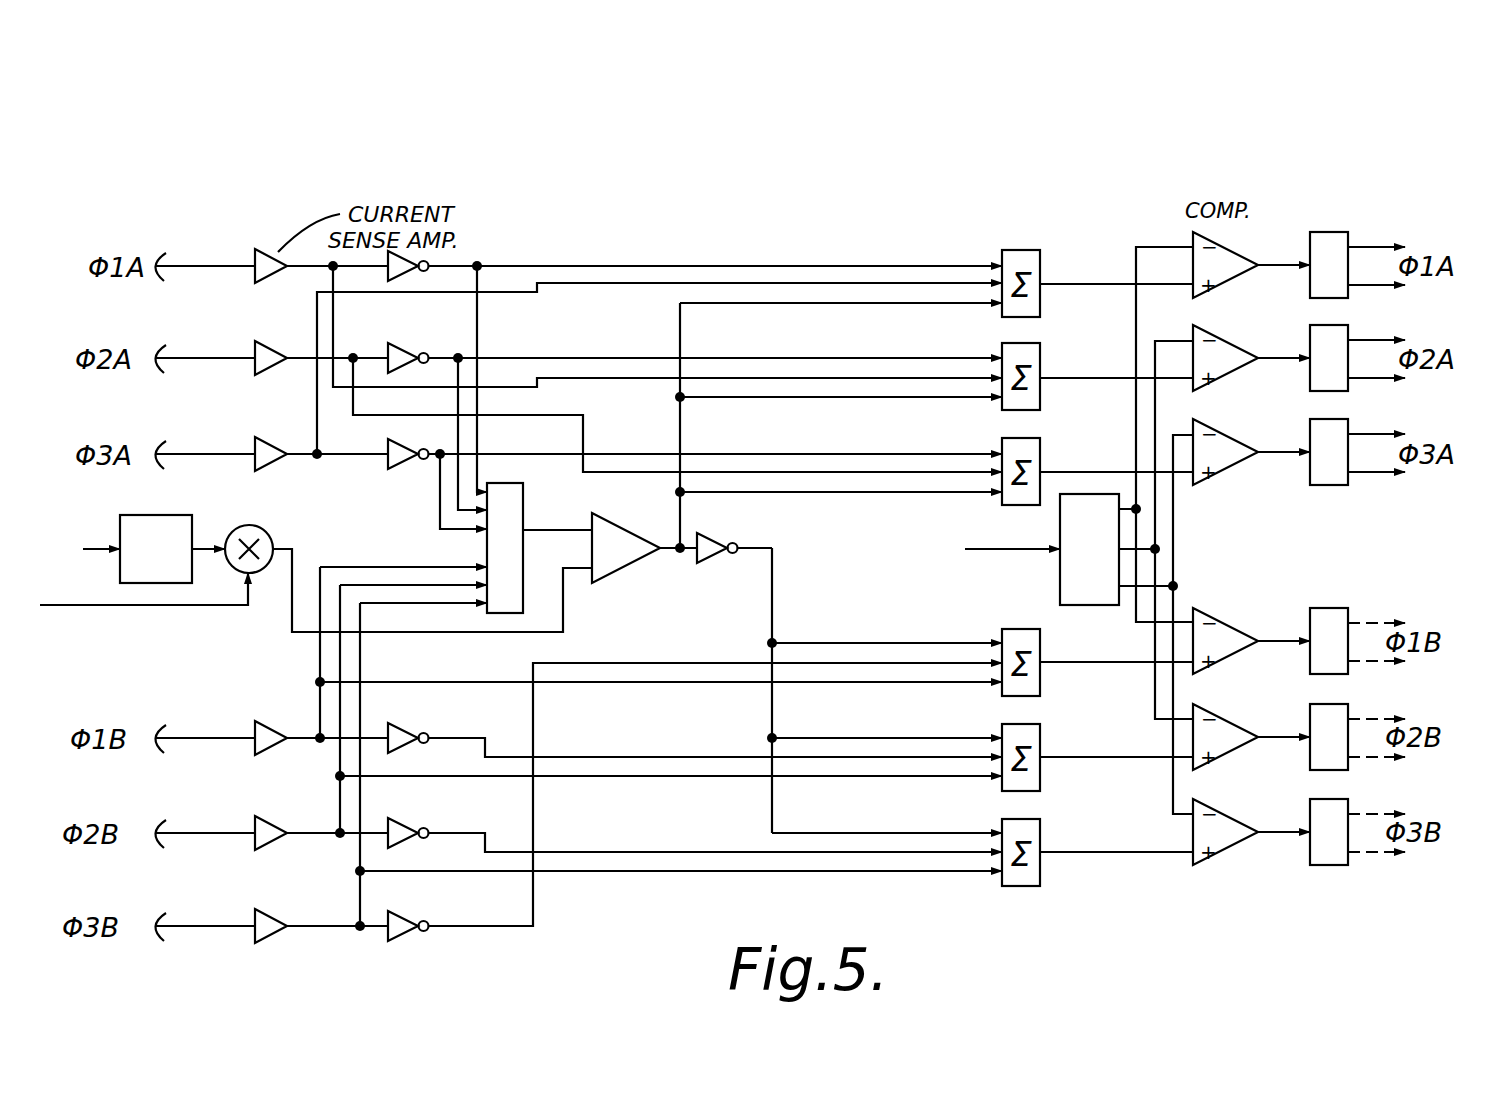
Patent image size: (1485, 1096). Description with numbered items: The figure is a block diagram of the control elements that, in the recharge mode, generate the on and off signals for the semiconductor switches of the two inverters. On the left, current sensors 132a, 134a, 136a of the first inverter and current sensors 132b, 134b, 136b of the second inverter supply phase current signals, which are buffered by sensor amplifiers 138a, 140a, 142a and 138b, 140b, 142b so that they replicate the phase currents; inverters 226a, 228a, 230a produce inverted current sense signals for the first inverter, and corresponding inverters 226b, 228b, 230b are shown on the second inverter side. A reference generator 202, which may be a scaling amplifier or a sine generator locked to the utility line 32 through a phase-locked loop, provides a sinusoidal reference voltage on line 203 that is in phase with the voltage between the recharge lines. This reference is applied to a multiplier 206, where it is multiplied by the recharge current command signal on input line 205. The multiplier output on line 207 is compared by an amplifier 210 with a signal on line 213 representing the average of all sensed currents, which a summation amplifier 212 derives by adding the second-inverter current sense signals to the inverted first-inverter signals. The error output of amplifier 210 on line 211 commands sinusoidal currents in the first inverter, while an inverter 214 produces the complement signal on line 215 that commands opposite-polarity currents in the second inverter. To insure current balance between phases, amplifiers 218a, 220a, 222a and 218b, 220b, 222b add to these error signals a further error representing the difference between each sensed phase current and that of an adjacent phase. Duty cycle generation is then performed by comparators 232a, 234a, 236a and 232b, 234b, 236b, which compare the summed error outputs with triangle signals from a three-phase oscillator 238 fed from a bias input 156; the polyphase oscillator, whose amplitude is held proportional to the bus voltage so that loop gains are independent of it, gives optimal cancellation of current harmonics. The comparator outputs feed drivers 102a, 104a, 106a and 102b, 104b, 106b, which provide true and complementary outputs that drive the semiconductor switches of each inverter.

The current sensor 132a is at (168, 254).
The current sensor 134a is at (166, 330).
The current sensor 136a is at (162, 423).
The sensor amplifier 138a is at (283, 216).
The sensor amplifier 140a is at (284, 326).
The sensor amplifier 142a is at (283, 420).
The inverter 226a is at (410, 253).
The inverter 228a is at (404, 342).
The inverter 230a is at (400, 470).
The reference generator 202 is at (150, 515).
The multiplier 206 is at (252, 525).
The line 203 is at (203, 556).
The utility line 32 is at (87, 561).
The input line 205 is at (118, 606).
The line 207 is at (293, 565).
The summation amplifier 212 is at (518, 478).
The line 213 is at (558, 532).
The amplifier 210 is at (623, 570).
The line 211 is at (680, 335).
The inverter 214 is at (727, 537).
The line 215 is at (775, 610).
The amplifier 218a is at (1030, 250).
The amplifier 220a is at (1030, 343).
The amplifier 222a is at (1030, 438).
The amplifier 218b is at (1034, 629).
The amplifier 220b is at (1034, 724).
The amplifier 222b is at (1034, 819).
The bias voltage input 156 is at (1026, 526).
The three-phase oscillator 238 is at (1060, 572).
The comparator 232a is at (1230, 247).
The comparator 234a is at (1223, 340).
The comparator 236a is at (1221, 427).
The comparator 232b is at (1248, 595).
The comparator 234b is at (1221, 706).
The comparator 236b is at (1218, 801).
The driver 102a is at (1347, 230).
The driver 104a is at (1328, 324).
The driver 106a is at (1328, 420).
The driver 102b is at (1356, 565).
The driver 104b is at (1322, 702).
The driver 106b is at (1320, 802).
The current sensor 132b is at (168, 706).
The current sensor 134b is at (175, 792).
The current sensor 136b is at (173, 888).
The sensor amplifier 138b is at (283, 692).
The sensor amplifier 140b is at (285, 792).
The sensor amplifier 142b is at (290, 890).
The inverter 226b is at (404, 728).
The inverter 228b is at (394, 817).
The inverter 230b is at (394, 906).